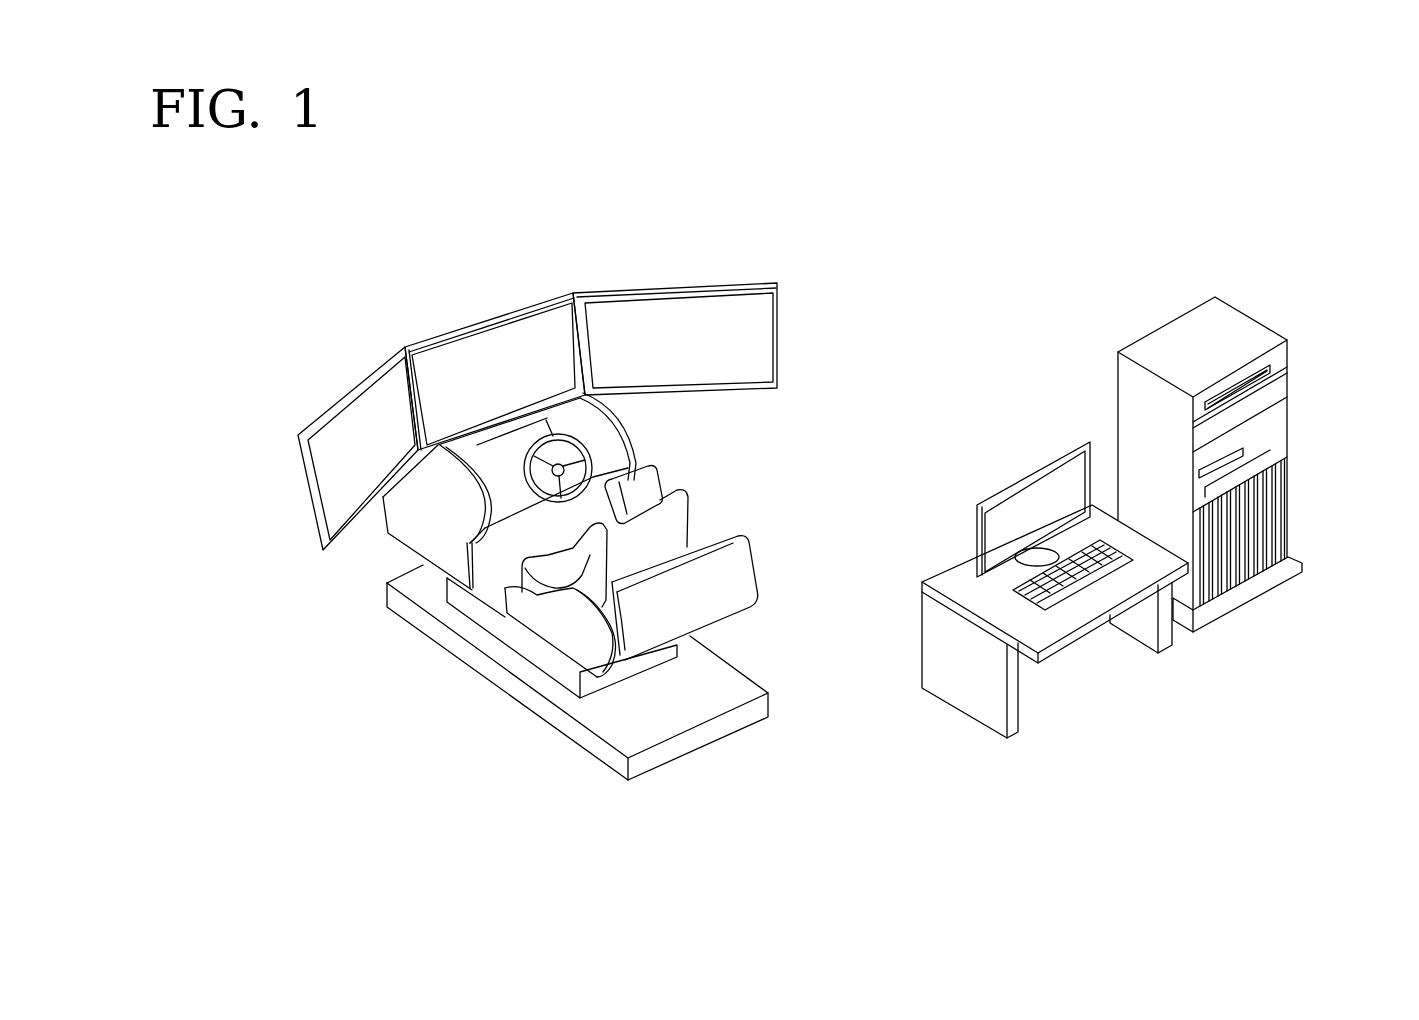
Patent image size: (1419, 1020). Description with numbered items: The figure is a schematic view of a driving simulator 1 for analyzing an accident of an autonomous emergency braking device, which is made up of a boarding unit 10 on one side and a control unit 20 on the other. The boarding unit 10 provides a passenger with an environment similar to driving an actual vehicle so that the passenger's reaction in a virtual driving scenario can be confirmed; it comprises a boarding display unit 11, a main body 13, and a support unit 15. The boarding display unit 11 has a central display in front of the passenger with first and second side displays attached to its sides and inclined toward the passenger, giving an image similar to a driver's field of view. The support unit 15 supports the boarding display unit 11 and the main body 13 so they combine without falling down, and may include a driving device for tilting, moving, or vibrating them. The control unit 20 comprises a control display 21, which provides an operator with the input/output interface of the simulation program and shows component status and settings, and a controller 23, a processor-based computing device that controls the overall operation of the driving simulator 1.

The driving simulator 1 is at (581, 206).
The boarding unit 10 is at (289, 368).
The boarding display unit 11 is at (477, 323).
The main body 13 is at (737, 571).
The support unit 15 is at (497, 650).
The control unit 20 is at (1322, 333).
The control display 21 is at (1010, 487).
The controller 23 is at (1275, 417).